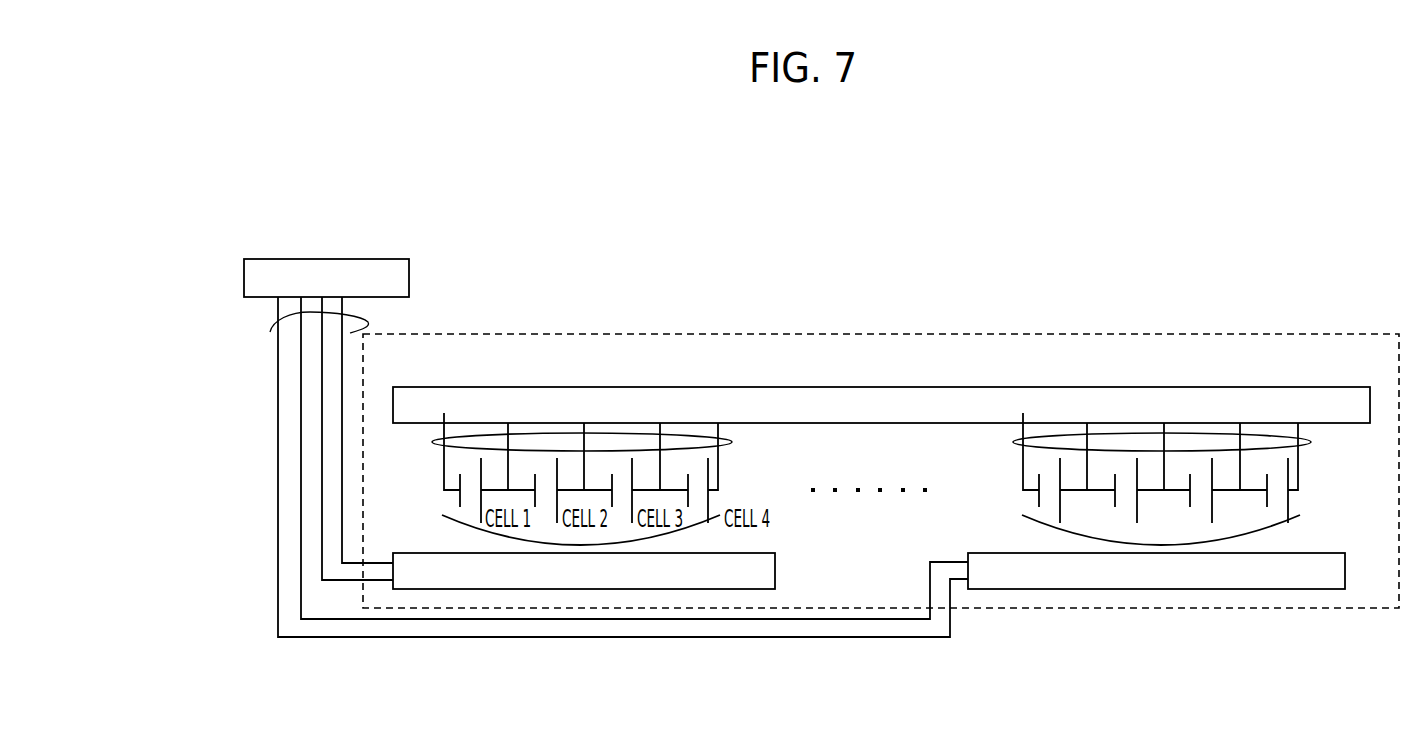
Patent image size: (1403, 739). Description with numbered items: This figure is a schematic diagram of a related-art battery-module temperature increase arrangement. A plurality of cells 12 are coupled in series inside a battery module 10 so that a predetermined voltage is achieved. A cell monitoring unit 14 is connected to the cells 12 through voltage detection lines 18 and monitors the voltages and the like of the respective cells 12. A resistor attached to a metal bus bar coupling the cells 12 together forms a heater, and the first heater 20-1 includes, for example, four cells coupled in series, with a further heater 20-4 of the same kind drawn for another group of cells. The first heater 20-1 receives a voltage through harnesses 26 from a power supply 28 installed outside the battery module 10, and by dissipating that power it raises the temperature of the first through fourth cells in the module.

The battery module 10 is at (1294, 333).
The cells 12 is at (497, 543).
The cell monitoring unit 14 is at (871, 400).
The voltage detection lines 18 is at (695, 432).
The heater 1 20-1 is at (578, 578).
The heater 4 20-4 is at (1157, 578).
The harnesses 26 is at (268, 326).
The power supply 28 is at (330, 272).